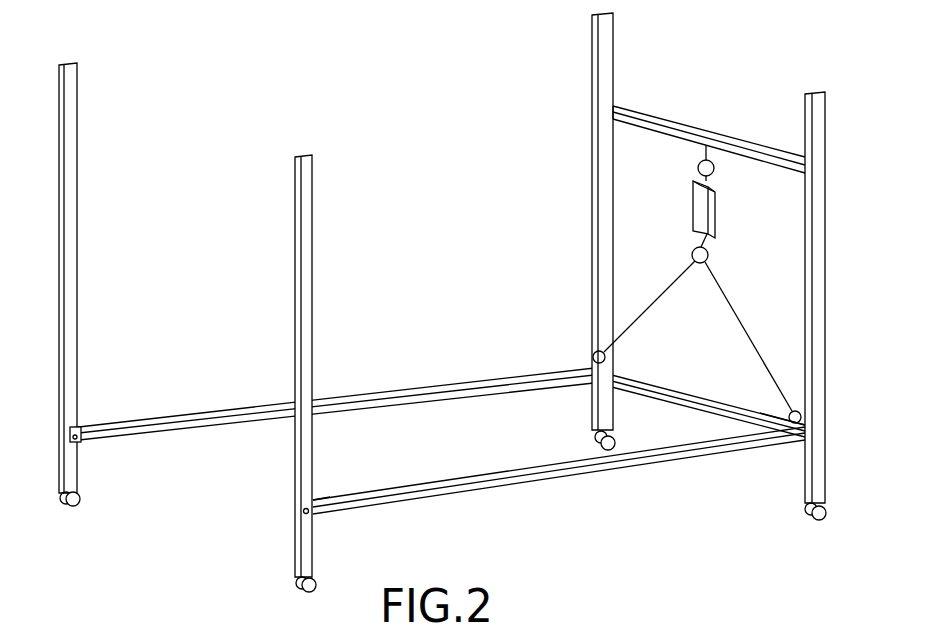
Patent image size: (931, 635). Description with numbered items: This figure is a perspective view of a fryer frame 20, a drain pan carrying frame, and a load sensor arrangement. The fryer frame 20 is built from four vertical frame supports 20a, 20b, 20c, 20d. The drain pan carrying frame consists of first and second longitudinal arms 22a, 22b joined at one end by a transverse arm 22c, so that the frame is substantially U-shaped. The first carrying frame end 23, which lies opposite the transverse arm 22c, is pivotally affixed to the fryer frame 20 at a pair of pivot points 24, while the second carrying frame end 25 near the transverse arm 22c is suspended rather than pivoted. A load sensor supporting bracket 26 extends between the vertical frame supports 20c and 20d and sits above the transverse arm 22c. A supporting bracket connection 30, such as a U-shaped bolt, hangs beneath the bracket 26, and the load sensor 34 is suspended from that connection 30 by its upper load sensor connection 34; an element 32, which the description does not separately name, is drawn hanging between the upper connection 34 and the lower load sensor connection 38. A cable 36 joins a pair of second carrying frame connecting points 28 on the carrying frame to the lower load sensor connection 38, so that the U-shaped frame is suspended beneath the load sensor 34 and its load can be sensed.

The fryer frame 20 is at (48, 269).
The vertical frame support 20a is at (78, 192).
The vertical frame support 20b is at (313, 305).
The vertical frame support 20c is at (592, 195).
The vertical frame support 20d is at (828, 263).
The first longitudinal arm 22a is at (457, 383).
The second longitudinal arm 22b is at (531, 486).
The transverse arm 22c is at (677, 407).
The first carrying frame end 23 is at (107, 416).
The pivot points 24 is at (83, 447).
The second carrying frame end 25 is at (713, 420).
The load sensor supporting bracket 26 is at (667, 118).
The second carrying frame connecting points 28 is at (608, 357).
The supporting bracket connection 30 is at (700, 150).
The weight 32 is at (717, 210).
The load sensor 34 is at (714, 170).
The cable 36 is at (737, 320).
The lower load sensor connection 38 is at (710, 257).